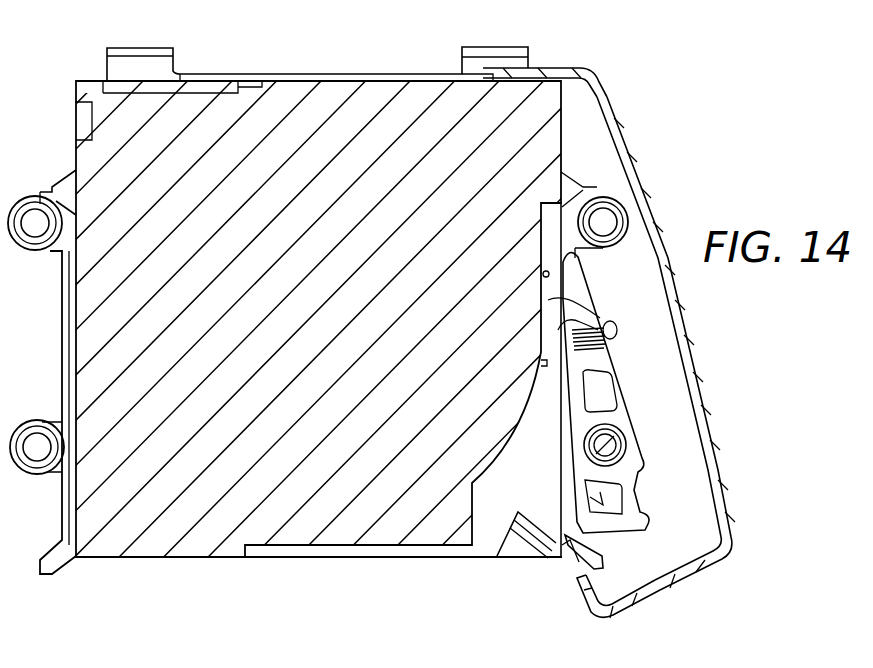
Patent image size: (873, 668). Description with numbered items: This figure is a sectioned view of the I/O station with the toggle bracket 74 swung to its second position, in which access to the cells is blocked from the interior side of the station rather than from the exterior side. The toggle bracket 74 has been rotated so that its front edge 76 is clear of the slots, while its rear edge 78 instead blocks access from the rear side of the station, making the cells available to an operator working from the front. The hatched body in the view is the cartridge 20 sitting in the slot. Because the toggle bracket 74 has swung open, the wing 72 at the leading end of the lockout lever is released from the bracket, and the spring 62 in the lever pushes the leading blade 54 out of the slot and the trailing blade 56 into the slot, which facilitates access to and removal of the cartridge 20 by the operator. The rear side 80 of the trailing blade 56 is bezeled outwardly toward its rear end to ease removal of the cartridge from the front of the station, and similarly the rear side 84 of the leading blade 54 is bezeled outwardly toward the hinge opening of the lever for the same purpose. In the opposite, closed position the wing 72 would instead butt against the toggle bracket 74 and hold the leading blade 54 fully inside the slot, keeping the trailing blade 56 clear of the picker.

The cartridge 20 is at (302, 80).
The leading blade 54 is at (570, 565).
The trailing blade 56 is at (597, 311).
The spring 62 is at (600, 553).
The wing 72 is at (652, 520).
The toggle bracket 74 is at (713, 405).
The front edge 76 is at (592, 620).
The rear edge 78 is at (582, 68).
The rear side of the trailing blade 80 is at (583, 284).
The rear side of the leading blade 84 is at (555, 518).